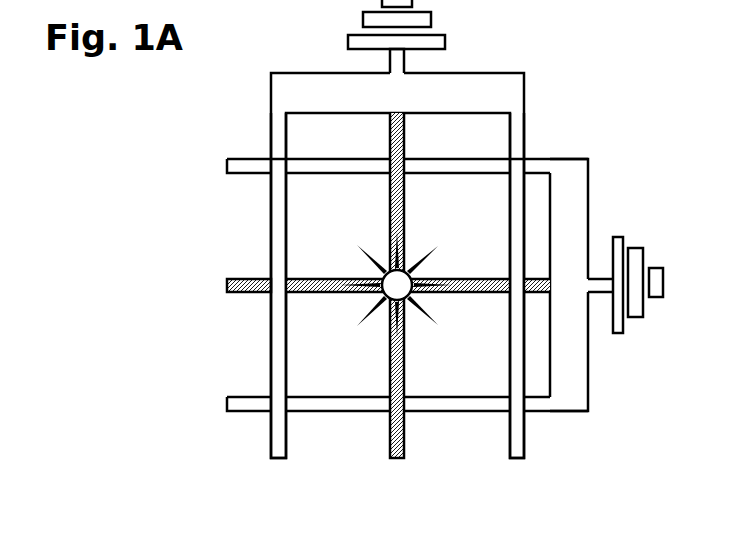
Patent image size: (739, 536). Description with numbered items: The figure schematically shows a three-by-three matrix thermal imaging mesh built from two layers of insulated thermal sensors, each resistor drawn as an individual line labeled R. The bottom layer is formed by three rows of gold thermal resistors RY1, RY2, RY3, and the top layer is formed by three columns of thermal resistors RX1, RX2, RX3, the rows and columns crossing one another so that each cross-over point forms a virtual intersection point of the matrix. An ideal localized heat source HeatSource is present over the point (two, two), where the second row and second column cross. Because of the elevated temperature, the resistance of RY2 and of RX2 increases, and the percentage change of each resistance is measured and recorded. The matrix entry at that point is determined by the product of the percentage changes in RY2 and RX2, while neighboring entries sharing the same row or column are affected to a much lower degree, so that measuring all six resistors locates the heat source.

The first row thermal resistor RY1 is at (394, 179).
The second row thermal resistor RY2 is at (375, 300).
The third row thermal resistor RY3 is at (394, 417).
The first column thermal resistor RX1 is at (273, 305).
The second column thermal resistor RX2 is at (393, 305).
The third column thermal resistor RX3 is at (512, 305).
The localized heat source HeatSource is at (421, 262).